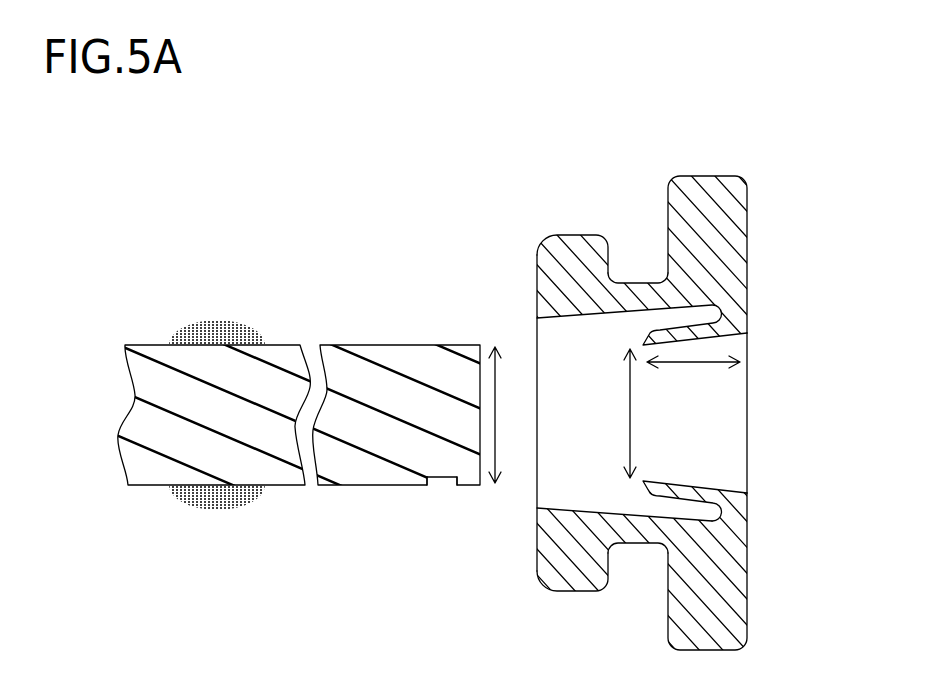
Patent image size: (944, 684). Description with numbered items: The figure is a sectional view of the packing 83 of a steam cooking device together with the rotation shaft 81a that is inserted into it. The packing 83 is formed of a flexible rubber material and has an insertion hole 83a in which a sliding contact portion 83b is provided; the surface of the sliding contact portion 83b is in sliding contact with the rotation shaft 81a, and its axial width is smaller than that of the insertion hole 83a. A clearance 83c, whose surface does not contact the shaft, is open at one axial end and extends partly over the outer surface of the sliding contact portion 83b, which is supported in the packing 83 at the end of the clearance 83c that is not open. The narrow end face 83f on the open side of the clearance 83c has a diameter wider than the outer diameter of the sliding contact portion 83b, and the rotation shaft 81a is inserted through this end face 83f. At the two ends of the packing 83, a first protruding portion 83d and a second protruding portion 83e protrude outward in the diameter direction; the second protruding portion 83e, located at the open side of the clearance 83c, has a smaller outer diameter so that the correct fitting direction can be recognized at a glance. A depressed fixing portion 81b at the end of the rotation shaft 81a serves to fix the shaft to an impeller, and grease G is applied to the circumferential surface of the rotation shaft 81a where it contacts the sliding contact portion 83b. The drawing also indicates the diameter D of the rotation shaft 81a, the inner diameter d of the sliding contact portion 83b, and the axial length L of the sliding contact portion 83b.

The packing 83 is at (758, 248).
The insertion hole 83a is at (731, 413).
The sliding contact portion 83b is at (703, 471).
The clearance 83c is at (653, 507).
The first protruding portion 83d is at (703, 176).
The second protruding portion 83e is at (577, 235).
The end face 83f is at (537, 343).
The rotation shaft 81a is at (357, 487).
The fixing portion 81b is at (440, 483).
The grease G is at (215, 512).
The diameter of the rotation shaft D is at (501, 415).
The inner diameter of the sliding contact portion d is at (636, 413).
The length of the sliding contact portion L is at (693, 377).